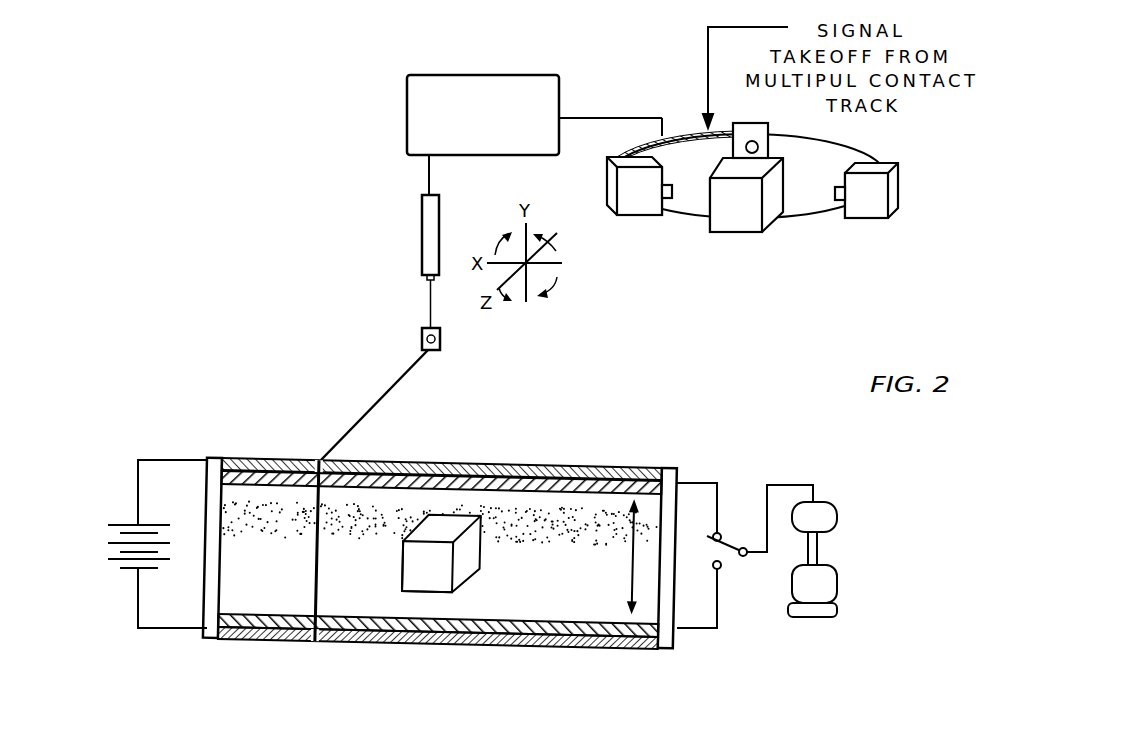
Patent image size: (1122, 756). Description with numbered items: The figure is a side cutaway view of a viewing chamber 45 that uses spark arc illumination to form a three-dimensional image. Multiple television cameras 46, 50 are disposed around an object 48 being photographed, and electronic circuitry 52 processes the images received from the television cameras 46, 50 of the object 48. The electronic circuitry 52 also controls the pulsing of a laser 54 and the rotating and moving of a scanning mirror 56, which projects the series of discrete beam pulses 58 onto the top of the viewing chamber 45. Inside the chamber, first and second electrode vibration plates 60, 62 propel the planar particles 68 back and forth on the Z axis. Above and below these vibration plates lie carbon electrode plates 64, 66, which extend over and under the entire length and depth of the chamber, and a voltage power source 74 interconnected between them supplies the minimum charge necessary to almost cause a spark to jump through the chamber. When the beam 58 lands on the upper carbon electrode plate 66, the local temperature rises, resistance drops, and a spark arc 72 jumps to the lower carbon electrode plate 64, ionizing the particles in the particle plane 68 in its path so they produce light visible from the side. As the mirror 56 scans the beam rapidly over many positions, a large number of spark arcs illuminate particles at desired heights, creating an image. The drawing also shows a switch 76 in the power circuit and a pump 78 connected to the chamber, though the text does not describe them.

The viewing chamber 45 is at (439, 540).
The television camera 46 is at (627, 202).
The object 48 is at (737, 218).
The television camera 50 is at (863, 200).
The electronic circuitry 52 is at (407, 112).
The laser 54 is at (422, 212).
The scanning mirror 56 is at (422, 332).
The beam 58 is at (367, 407).
The electrode vibration plate 60 is at (432, 464).
The electrode vibration plate 62 is at (525, 640).
The carbon electrode plate 64 is at (265, 642).
The upper carbon electrode plate 66 is at (243, 457).
The planar particles 68 is at (548, 532).
The spark arc 72 is at (317, 568).
The voltage power source 74 is at (150, 518).
The switch 76 is at (728, 538).
The pump 78 is at (840, 518).